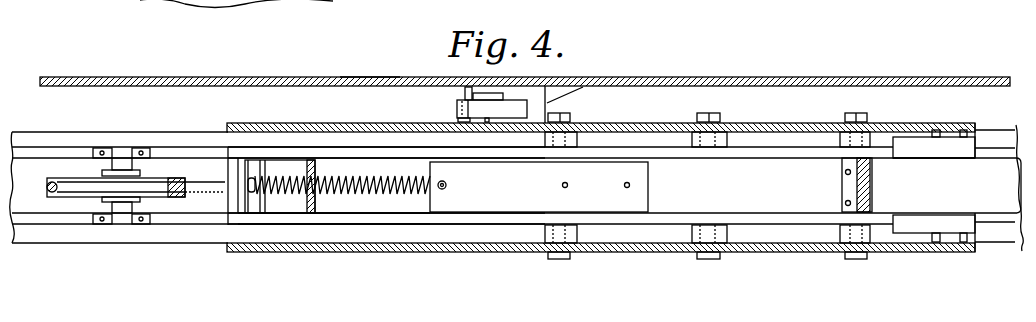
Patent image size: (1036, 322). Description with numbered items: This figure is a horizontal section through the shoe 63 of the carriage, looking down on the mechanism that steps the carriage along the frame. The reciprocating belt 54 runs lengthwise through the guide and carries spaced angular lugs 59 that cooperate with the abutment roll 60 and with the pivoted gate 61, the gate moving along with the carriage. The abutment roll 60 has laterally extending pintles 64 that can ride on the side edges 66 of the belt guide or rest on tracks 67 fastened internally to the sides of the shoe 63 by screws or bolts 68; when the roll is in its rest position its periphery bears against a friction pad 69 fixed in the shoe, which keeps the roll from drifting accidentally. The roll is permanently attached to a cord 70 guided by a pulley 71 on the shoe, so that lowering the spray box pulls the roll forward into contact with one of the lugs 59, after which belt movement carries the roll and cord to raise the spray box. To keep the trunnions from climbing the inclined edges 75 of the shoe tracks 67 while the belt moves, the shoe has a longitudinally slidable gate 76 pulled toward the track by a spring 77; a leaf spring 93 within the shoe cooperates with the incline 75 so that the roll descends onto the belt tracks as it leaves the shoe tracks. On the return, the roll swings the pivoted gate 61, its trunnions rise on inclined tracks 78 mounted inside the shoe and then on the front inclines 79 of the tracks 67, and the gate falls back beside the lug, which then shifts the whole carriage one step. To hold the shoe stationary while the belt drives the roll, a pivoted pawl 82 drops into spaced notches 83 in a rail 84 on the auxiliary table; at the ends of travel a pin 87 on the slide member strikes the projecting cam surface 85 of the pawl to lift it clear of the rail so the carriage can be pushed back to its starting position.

The belt 54 is at (1008, 170).
The angular lugs 59 is at (275, 165).
The abutment roll 60 is at (317, 203).
The pivoted gate 61 is at (877, 204).
The shoe 63 is at (929, 137).
The pintles 64 is at (285, 160).
The side edges 66 is at (983, 150).
The tracks 67 is at (775, 162).
The screws or bolts 68 is at (573, 117).
The friction pad 69 is at (360, 78).
The cord 70 is at (190, 180).
The pulley 71 is at (97, 193).
The inclined edges 75 is at (478, 151).
The slidable gate 76 is at (425, 222).
The spring 77 is at (358, 178).
The inclined tracks 78 is at (962, 156).
The front inclines 79 is at (876, 150).
The pivoted pawl 82 is at (520, 105).
The notches 83 is at (590, 83).
The rail 84 is at (677, 95).
The cam surface 85 is at (495, 93).
The pin 87 is at (462, 98).
The leaf spring 93 is at (539, 187).